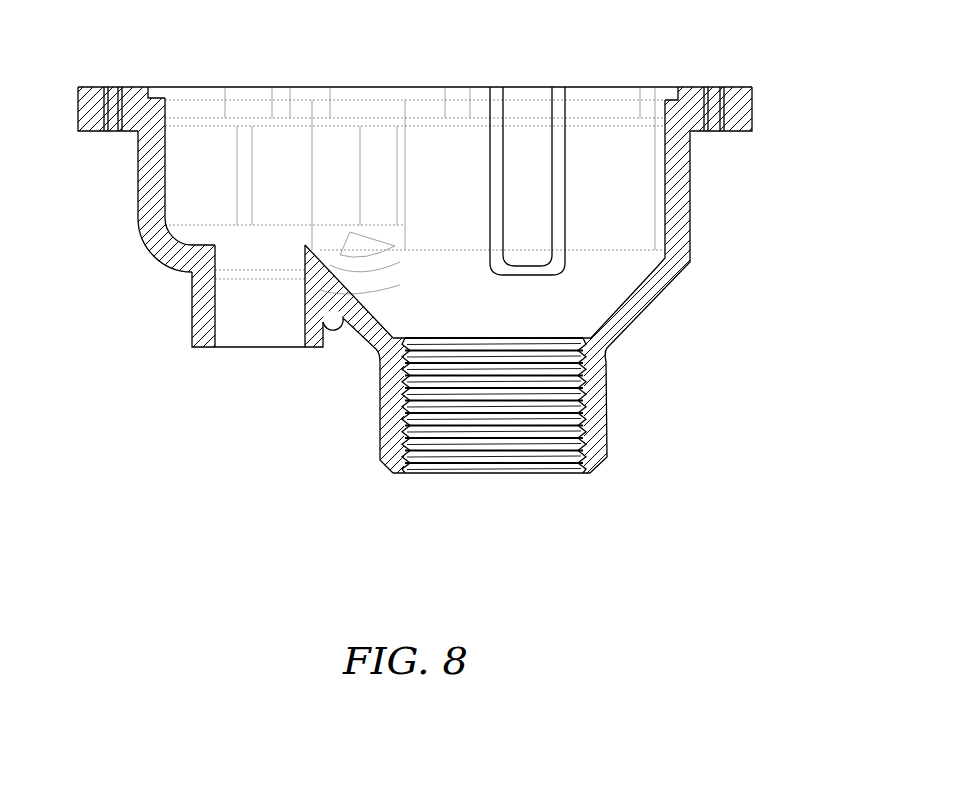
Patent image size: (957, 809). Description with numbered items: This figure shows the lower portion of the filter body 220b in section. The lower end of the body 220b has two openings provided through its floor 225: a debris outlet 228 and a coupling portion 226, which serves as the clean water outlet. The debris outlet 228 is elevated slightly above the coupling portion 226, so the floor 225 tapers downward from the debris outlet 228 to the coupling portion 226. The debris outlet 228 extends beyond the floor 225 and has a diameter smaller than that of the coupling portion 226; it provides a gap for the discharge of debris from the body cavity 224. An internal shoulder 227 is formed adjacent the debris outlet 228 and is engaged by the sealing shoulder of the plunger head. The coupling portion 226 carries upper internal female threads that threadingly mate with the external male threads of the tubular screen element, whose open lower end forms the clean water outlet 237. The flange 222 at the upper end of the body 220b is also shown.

The body 220b is at (127, 371).
The flange 222 is at (141, 87).
The body cavity 224 is at (447, 195).
The floor 225 is at (360, 320).
The coupling portion 226 is at (595, 413).
The internal shoulder 227 is at (200, 232).
The debris outlet 228 is at (243, 360).
The clean water outlet 237 is at (500, 474).